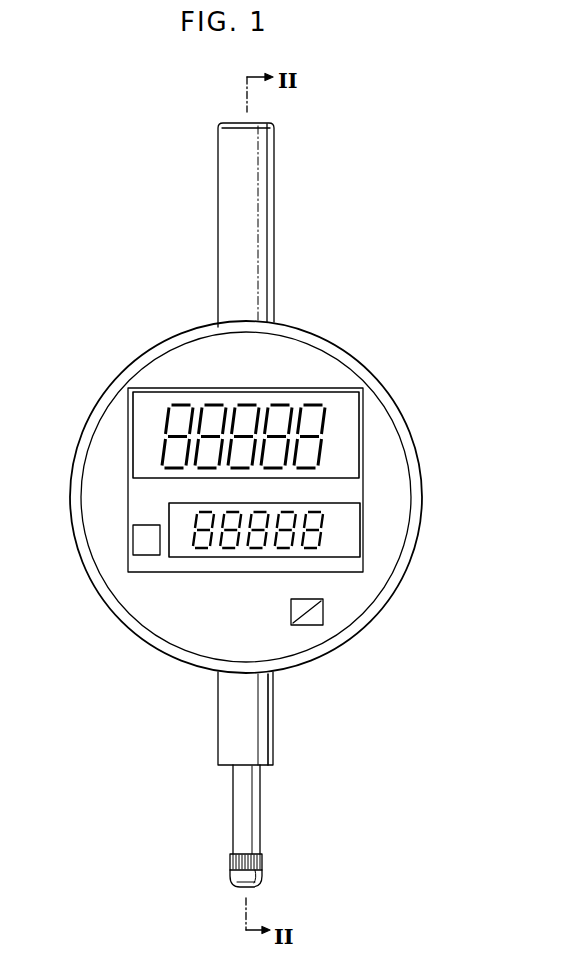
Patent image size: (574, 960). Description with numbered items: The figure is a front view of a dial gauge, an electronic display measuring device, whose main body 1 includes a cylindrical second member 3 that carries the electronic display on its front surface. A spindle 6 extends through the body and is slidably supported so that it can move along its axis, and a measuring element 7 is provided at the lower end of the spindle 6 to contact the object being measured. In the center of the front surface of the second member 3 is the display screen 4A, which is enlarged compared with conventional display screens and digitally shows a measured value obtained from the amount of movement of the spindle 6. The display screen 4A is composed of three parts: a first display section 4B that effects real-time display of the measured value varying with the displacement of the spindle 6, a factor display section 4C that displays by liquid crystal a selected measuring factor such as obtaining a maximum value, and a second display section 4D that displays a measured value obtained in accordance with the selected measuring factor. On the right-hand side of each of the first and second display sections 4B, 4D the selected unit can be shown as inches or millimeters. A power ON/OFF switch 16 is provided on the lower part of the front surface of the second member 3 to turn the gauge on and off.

The main body 1 is at (317, 323).
The second member 3 is at (140, 367).
The display screen 4A is at (371, 543).
The first display section 4B is at (353, 417).
The factor display section 4C is at (135, 552).
The second display section 4D is at (355, 507).
The spindle 6 is at (250, 812).
The measuring element 7 is at (262, 879).
The power ON/OFF switch 16 is at (312, 626).